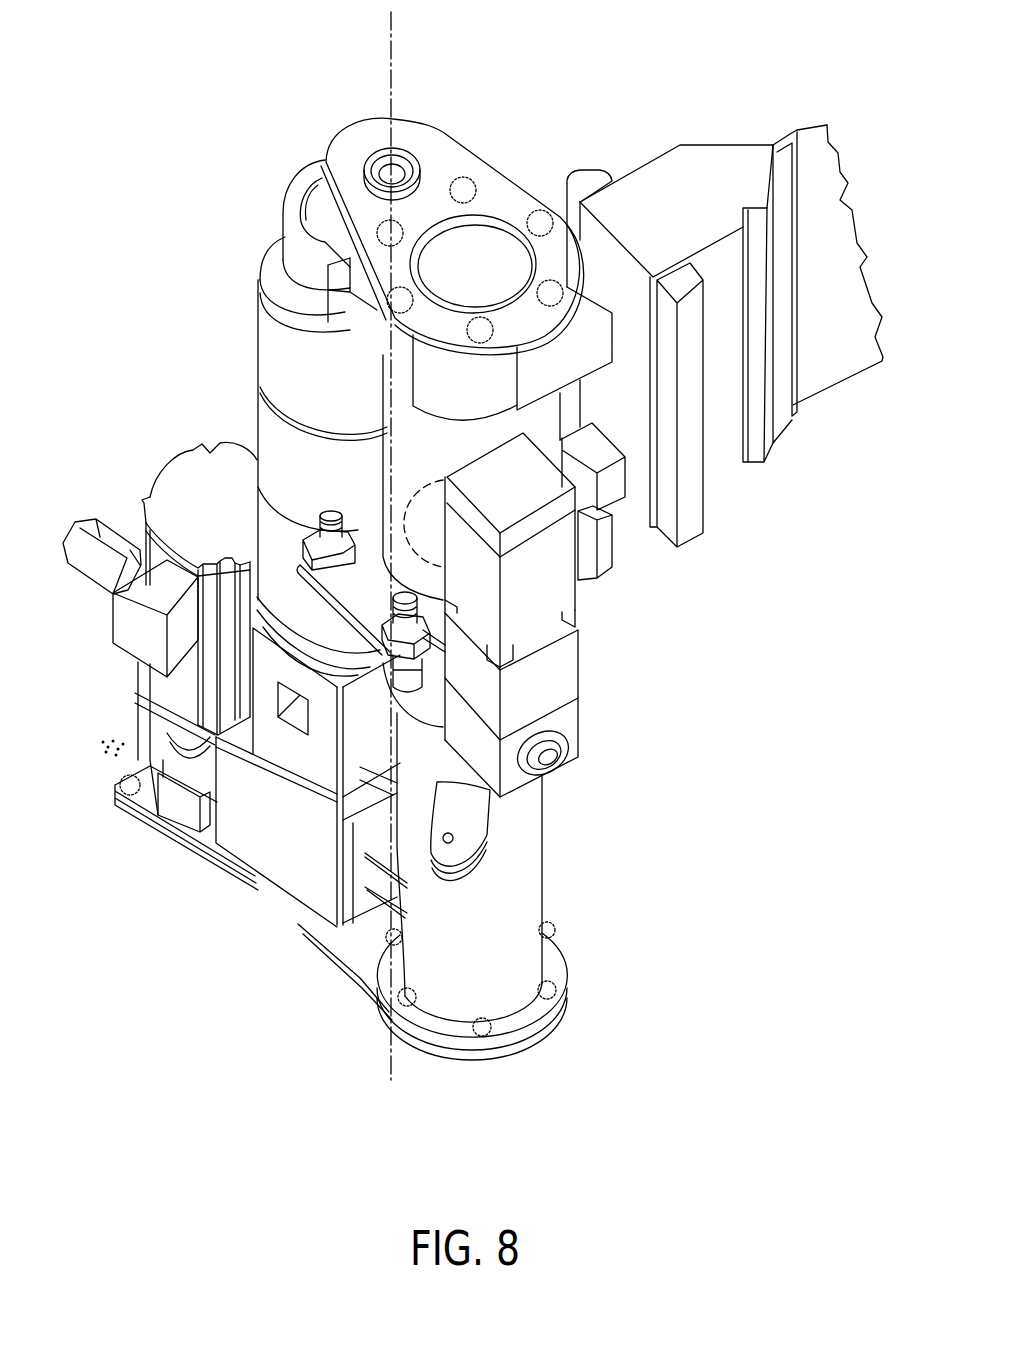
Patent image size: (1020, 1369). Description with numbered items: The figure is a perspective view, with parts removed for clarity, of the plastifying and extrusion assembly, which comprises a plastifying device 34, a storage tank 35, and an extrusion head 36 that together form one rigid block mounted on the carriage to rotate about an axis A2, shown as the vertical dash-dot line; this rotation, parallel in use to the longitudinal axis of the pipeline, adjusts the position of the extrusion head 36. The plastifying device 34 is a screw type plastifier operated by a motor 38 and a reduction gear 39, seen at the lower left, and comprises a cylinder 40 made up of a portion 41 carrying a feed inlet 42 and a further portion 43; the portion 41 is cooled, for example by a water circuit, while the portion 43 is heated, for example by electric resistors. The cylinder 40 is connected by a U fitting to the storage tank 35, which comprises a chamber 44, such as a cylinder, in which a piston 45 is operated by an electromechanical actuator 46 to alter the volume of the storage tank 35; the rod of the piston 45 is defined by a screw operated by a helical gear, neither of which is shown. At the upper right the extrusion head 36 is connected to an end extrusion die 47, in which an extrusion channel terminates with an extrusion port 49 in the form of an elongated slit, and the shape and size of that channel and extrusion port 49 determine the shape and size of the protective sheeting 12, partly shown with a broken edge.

The axis A2 is at (393, 50).
The protective sheeting 12 is at (843, 358).
The plastifying device 34 is at (242, 392).
The storage tank 35 is at (588, 395).
The extrusion head 36 is at (720, 118).
The motor 38 is at (184, 474).
The reduction gear 39 is at (275, 858).
The cylinder 40 is at (270, 420).
The portion 41 is at (267, 654).
The feed inlet 42 is at (283, 723).
The portion 43 is at (262, 318).
The chamber 44 is at (543, 418).
The piston 45 is at (400, 478).
The electromechanical actuator 46 is at (600, 735).
The end extrusion die 47 is at (778, 142).
The extrusion port 49 is at (803, 130).